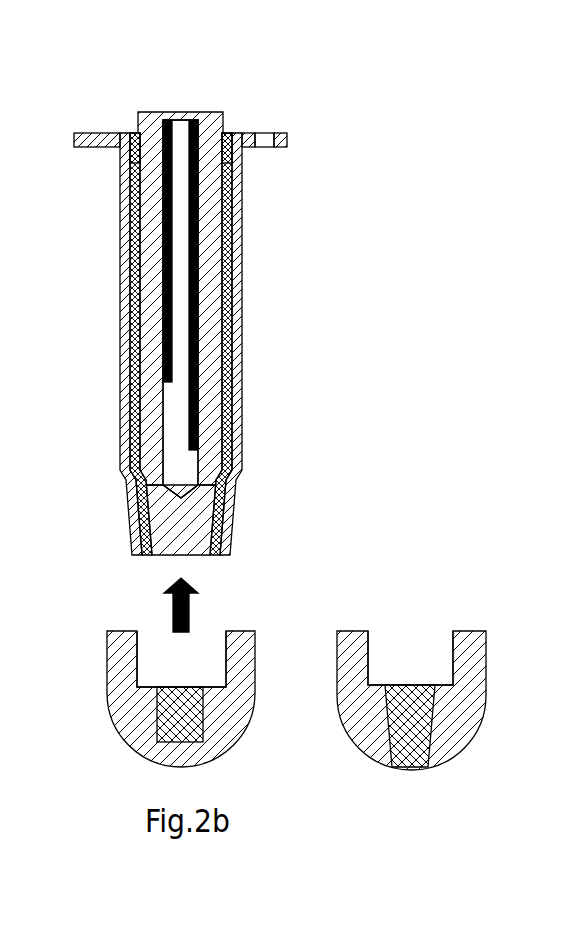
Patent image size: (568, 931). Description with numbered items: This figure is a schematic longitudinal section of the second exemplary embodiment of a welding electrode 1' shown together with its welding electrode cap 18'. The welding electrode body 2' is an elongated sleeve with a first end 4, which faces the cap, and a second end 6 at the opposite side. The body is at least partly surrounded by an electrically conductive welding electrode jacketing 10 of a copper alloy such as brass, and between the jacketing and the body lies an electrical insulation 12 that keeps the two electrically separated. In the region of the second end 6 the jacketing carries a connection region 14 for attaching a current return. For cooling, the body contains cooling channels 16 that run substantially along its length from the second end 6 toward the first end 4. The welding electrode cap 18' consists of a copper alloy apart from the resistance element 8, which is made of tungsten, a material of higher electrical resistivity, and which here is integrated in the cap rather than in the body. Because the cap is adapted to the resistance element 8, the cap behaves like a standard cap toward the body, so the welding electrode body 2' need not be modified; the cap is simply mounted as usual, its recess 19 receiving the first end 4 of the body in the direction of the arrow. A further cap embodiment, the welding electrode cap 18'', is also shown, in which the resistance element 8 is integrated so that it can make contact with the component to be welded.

The welding electrode 1' is at (255, 293).
The welding electrode body 2' is at (169, 305).
The first end 4 is at (128, 575).
The second end 6 is at (214, 102).
The resistance element 8 is at (173, 727).
The welding electrode jacketing 10 is at (128, 278).
The electrical insulation 12 is at (135, 132).
The connection region 14 is at (266, 153).
The cooling channels 16 is at (181, 128).
The welding electrode cap 18' is at (212, 699).
The welding electrode cap 18'' is at (443, 700).
The recess 19 is at (191, 665).